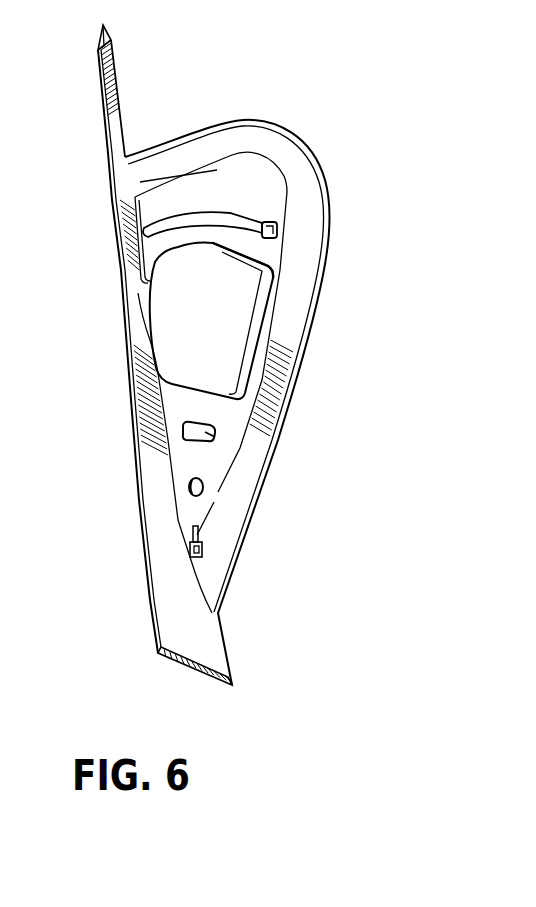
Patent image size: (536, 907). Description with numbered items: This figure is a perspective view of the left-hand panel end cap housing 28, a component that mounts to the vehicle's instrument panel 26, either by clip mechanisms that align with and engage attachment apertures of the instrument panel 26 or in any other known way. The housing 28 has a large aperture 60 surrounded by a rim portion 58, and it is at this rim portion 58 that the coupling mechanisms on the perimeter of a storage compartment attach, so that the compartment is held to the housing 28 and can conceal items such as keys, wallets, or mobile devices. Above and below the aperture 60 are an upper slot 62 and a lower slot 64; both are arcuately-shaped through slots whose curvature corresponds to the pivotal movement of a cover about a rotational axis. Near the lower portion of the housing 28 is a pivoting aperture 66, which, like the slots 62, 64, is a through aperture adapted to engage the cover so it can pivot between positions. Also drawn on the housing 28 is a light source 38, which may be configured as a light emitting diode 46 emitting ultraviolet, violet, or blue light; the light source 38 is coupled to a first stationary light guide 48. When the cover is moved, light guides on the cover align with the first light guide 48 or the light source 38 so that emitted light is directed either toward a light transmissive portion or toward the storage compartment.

The instrument panel 26 is at (106, 149).
The housing 28 is at (244, 182).
The upper slot 62 is at (272, 222).
The rim portion 58 is at (274, 261).
The aperture 60 is at (220, 305).
The lower slot 64 is at (215, 436).
The pivoting aperture 66 is at (203, 487).
The first stationary light guide 48 is at (199, 530).
The light emitting diode 46 is at (203, 549).
The light source 38 is at (200, 567).